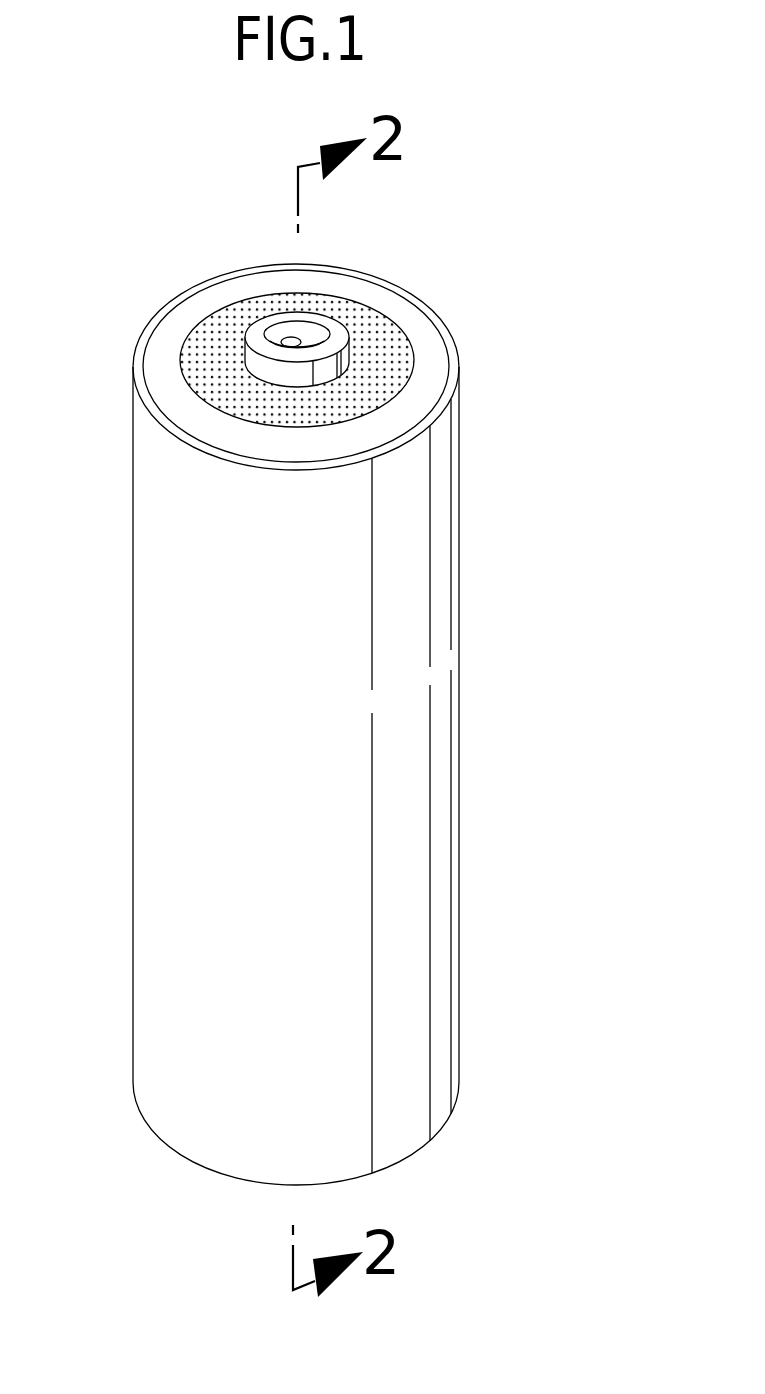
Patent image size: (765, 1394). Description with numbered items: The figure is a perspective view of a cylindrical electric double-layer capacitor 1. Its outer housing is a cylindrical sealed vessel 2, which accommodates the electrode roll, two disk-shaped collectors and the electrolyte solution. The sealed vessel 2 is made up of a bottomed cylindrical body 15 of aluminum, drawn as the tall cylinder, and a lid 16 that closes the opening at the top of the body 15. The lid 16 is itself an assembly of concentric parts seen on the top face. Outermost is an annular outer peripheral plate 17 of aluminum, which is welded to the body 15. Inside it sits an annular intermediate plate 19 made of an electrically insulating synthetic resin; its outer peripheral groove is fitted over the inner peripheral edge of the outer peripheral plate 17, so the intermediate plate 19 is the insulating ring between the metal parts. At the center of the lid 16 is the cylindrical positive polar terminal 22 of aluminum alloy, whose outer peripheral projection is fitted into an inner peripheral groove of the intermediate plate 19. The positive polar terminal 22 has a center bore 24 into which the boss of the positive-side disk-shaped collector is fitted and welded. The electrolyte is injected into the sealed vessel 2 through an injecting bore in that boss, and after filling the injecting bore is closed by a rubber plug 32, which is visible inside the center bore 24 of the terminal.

The cylindrical electric double-layer capacitor 1 is at (523, 450).
The cylindrical sealed vessel 2 is at (460, 625).
The bottomed cylindrical body 15 is at (460, 795).
The lid 16 is at (199, 305).
The annular outer peripheral plate 17 is at (157, 347).
The annular intermediate plate 19 is at (398, 350).
The cylindrical positive polar terminal 22 is at (355, 315).
The center bore 24 is at (270, 332).
The rubber plug 32 is at (297, 340).